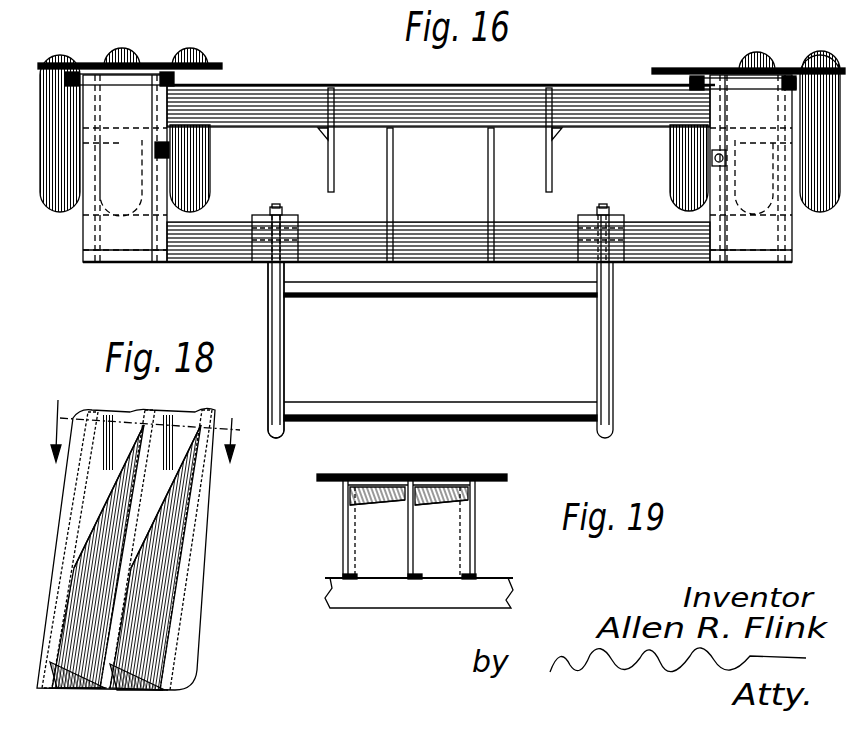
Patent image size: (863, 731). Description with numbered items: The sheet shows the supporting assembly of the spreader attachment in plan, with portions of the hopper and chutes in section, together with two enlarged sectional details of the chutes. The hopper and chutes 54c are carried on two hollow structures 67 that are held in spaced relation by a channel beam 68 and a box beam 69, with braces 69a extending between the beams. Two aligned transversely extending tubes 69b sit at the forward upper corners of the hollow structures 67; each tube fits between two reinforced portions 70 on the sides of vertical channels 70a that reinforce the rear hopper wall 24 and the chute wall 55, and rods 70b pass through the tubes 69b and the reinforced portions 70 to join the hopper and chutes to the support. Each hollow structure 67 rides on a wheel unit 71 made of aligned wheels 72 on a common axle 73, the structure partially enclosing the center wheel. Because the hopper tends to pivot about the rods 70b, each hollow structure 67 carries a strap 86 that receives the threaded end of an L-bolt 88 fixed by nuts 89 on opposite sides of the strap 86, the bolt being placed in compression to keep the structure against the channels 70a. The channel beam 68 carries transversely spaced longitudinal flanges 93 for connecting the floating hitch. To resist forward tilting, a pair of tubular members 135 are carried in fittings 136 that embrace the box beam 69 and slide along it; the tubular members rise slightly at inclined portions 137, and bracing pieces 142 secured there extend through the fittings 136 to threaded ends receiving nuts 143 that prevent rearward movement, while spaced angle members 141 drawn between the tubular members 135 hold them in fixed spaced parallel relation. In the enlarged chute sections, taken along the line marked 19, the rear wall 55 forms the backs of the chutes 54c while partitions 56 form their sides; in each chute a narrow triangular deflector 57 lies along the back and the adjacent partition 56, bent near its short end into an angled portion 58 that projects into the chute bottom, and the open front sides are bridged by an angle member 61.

In FIG. 16, the rear wall 24 is at (80, 62).
In FIG. 16, the tubes 69b is at (118, 78).
In FIG. 16, the vertical channels 70a is at (160, 66).
In FIG. 16, the reinforced portions 70 is at (185, 72).
In FIG. 16, the rods 70b is at (180, 82).
In FIG. 16, the strap 86 is at (165, 108).
In FIG. 16, the wheel unit 71 is at (214, 149).
In FIG. 16, the channel beam 68 is at (270, 118).
In FIG. 16, the L-bolt 88 is at (166, 150).
In FIG. 16, the nuts 89 is at (712, 162).
In FIG. 16, the axle 73 is at (437, 168).
In FIG. 16, the wheels 72 is at (60, 205).
In FIG. 16, the box beam 69 is at (232, 232).
In FIG. 16, the braces 69a is at (394, 172).
In FIG. 16, the flanges 93 is at (335, 162).
In FIG. 16, the bracing pieces 142 is at (290, 198).
In FIG. 16, the nuts 143 is at (283, 213).
In FIG. 16, the fittings 136 is at (258, 264).
In FIG. 16, the inclined portions 137 is at (285, 370).
In FIG. 16, the tubular members 135 is at (266, 369).
In FIG. 16, the cross member 141 is at (443, 285).
In FIG. 16, the hollow structures 67 is at (135, 254).
In FIG. 18, the section line 19 is at (155, 416).
In FIG. 18, the rear wall 55 is at (188, 427).
In FIG. 19, the rear wall 55 is at (396, 476).
In FIG. 18, the chutes 54c is at (160, 504).
In FIG. 19, the chutes 54c is at (440, 576).
In FIG. 18, the partitions 56 is at (133, 579).
In FIG. 19, the partitions 56 is at (343, 542).
In FIG. 18, the deflector 57 is at (163, 639).
In FIG. 19, the deflector 57 is at (390, 487).
In FIG. 18, the angled portion 58 is at (98, 684).
In FIG. 19, the angled portion 58 is at (425, 504).
In FIG. 19, the angle member 61 is at (472, 604).